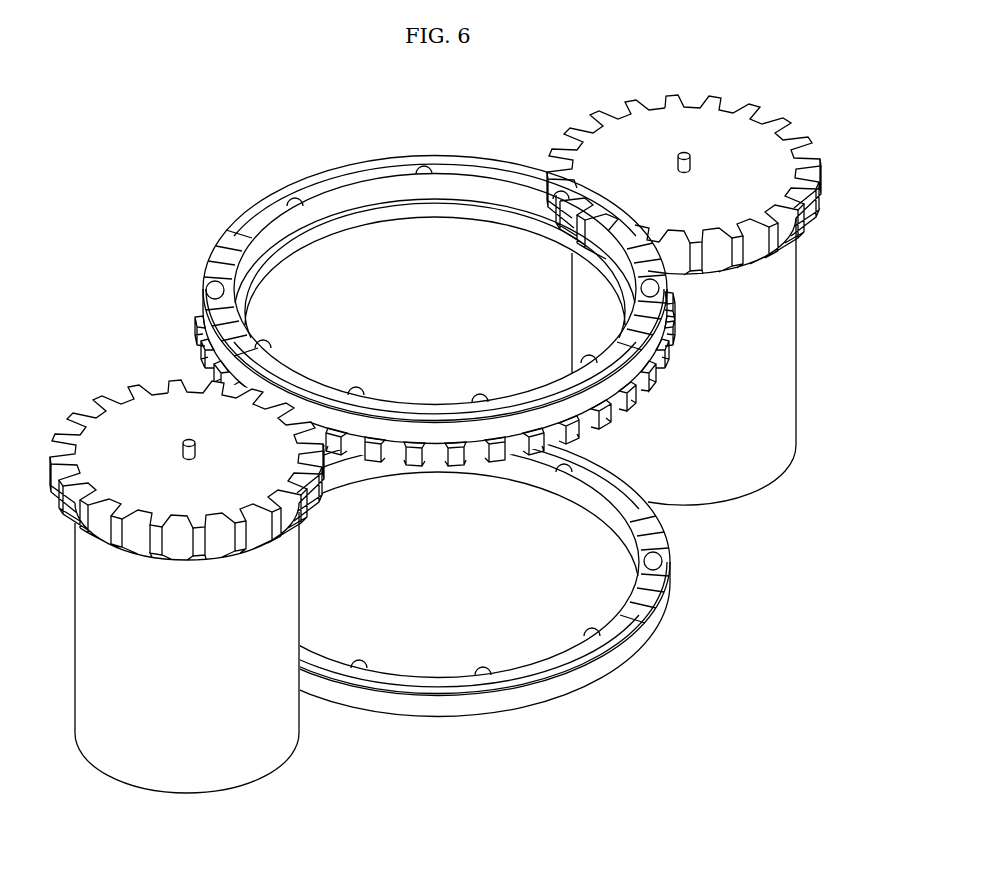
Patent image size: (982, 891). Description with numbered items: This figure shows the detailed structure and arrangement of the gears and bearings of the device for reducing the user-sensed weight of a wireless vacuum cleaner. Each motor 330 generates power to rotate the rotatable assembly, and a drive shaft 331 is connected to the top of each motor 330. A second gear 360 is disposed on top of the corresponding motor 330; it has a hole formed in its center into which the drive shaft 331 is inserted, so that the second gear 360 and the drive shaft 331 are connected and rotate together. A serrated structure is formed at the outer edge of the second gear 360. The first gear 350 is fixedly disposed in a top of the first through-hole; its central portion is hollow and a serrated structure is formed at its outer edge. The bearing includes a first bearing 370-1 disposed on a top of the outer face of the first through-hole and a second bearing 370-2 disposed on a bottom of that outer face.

The motor 330 is at (188, 770).
The drive shaft 331 is at (187, 442).
The first gear 350 is at (455, 462).
The second gear 360 is at (117, 440).
The first bearing 370-1 is at (437, 157).
The second bearing 370-2 is at (445, 714).